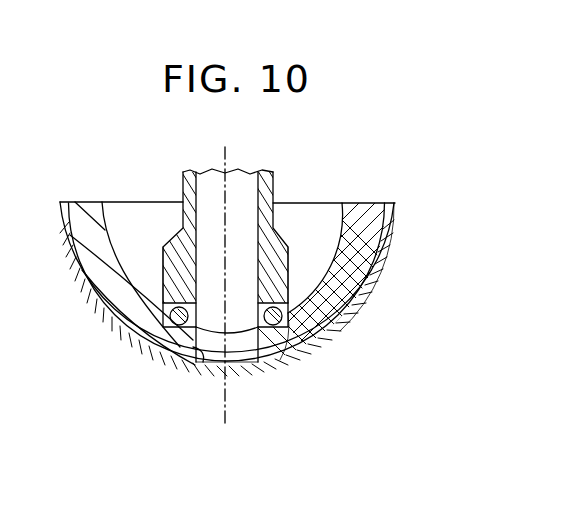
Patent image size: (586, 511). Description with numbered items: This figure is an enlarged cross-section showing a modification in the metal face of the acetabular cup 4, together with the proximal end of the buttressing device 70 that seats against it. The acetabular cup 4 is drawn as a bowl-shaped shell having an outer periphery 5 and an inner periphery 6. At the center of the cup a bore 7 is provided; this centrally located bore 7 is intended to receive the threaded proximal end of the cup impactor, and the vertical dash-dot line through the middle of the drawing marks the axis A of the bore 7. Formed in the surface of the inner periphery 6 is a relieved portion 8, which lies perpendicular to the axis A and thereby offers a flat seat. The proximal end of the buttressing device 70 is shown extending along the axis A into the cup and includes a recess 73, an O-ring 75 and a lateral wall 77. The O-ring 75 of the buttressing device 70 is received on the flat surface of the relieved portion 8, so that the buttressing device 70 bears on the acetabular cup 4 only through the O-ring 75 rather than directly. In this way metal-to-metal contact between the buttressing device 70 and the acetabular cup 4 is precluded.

The axis A is at (229, 154).
The acetabular cup 4 is at (395, 276).
The outer periphery 5 is at (376, 288).
The inner periphery 6 is at (345, 218).
The bore 7 is at (200, 372).
The relieved portion 8 is at (167, 312).
The buttressing device 70 is at (290, 177).
The recess 73 is at (292, 308).
The O-ring 75 is at (285, 350).
The lateral wall 77 is at (303, 348).